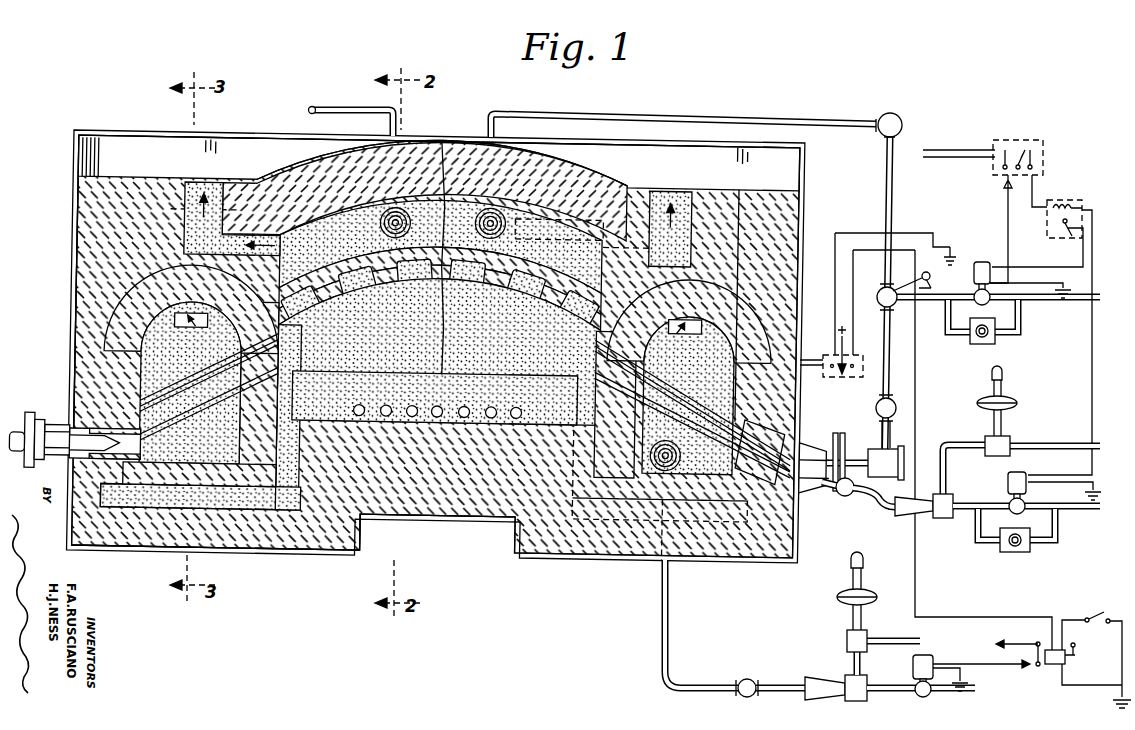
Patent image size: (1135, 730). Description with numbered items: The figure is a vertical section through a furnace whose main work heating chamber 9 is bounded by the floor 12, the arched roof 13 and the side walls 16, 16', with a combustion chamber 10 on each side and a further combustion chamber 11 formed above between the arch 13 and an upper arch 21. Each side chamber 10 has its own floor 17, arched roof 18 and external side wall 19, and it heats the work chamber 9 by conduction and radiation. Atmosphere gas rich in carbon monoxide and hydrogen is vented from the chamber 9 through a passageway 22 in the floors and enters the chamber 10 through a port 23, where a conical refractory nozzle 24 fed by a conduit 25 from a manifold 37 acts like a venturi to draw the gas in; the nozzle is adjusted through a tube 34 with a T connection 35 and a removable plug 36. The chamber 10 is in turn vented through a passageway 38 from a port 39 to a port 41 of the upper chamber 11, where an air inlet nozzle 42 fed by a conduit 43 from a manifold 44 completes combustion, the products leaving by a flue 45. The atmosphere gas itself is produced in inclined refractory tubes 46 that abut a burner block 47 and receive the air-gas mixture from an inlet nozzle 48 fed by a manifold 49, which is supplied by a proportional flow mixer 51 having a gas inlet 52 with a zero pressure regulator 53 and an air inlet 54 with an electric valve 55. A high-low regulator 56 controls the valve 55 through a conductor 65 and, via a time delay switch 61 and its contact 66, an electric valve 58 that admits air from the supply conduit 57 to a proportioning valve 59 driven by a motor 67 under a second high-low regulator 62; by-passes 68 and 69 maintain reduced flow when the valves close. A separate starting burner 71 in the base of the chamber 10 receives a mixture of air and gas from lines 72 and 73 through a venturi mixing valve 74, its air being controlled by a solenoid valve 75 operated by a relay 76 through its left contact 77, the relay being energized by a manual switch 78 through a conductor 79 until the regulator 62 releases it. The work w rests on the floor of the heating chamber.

The main work heating chamber 9 is at (460, 350).
The combustion chamber 10 is at (162, 362).
The combustion chamber 11 is at (548, 235).
The floor 12 is at (535, 420).
The arched roof 13 is at (442, 284).
The side wall 16 is at (345, 416).
The side wall 16' is at (223, 416).
The floor 17 is at (215, 472).
The arched roof 18 is at (796, 236).
The external side wall 19 is at (78, 347).
The arch 21 is at (585, 185).
The passageway 22 is at (280, 530).
The port 23 is at (200, 432).
The nozzle 24 is at (62, 412).
The conduit 25 is at (894, 440).
The tube 34 is at (855, 455).
The T connection 35 is at (878, 464).
The removable plug 36 is at (905, 462).
The manifold 37 is at (897, 408).
The passageway 38 is at (160, 178).
The port 39 is at (174, 322).
The port 41 is at (440, 260).
The air inlet nozzle 42 is at (385, 210).
The conduit 43 is at (318, 108).
The manifold 44 is at (902, 118).
The flue 45 is at (215, 182).
The refractory tube 46 is at (235, 402).
The burner block 47 is at (790, 430).
The burner or inlet nozzle 48 is at (805, 500).
The manifold 49 is at (847, 497).
The proportional flow mixer 51 is at (918, 512).
The gas inlet 52 is at (946, 480).
The zero pressure regulator 53 is at (1008, 398).
The air inlet 54 is at (990, 503).
The electric valve 55 is at (1024, 509).
The high-low regulator 56 is at (1045, 156).
The air supply conduit 57 is at (900, 304).
The electric valve 58 is at (972, 262).
The proportioning valve 59 is at (890, 320).
The time delay switch 61 is at (1055, 200).
The high-low regulator 62 is at (835, 366).
The conductor 65 is at (1094, 358).
The contact 66 is at (1068, 240).
The motor 67 is at (932, 277).
The by-pass 68 is at (1017, 552).
The by-pass 69 is at (997, 337).
The burner 71 is at (681, 458).
The air line 72 is at (898, 696).
The gas line 73 is at (885, 641).
The venturi mixing valve 74 is at (825, 698).
The solenoid valve 75 is at (912, 665).
The relay 76 is at (1056, 666).
The left contact 77 is at (1032, 672).
The manual switch 78 is at (1088, 615).
The conductor 79 is at (917, 362).
The work pieces w is at (448, 406).